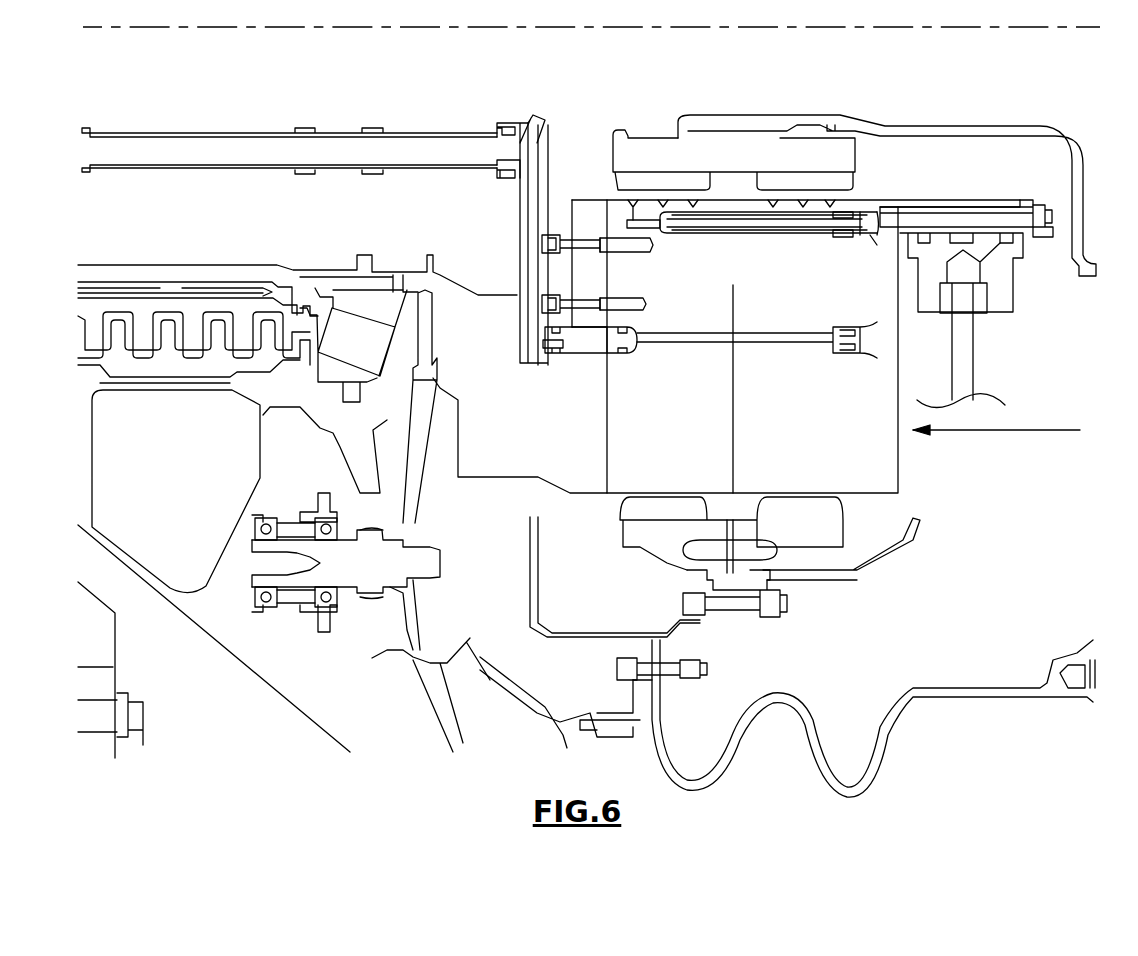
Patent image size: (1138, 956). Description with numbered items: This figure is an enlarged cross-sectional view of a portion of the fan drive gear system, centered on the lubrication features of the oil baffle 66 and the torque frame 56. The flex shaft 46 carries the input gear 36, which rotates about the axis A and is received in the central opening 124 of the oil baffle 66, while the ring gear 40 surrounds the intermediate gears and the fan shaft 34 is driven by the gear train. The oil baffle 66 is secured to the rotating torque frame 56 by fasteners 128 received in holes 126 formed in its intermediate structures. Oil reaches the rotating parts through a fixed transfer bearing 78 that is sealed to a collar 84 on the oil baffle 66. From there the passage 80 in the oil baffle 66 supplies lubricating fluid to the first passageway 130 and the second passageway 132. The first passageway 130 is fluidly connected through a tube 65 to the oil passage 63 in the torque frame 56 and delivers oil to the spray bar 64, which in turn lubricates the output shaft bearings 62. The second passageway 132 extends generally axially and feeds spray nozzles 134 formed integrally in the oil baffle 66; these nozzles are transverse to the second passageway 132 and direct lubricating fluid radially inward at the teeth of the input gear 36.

The axis A is at (908, 30).
The spray bar 64 is at (360, 128).
The flex shaft 46 is at (886, 128).
The input gear 36 is at (850, 157).
The central opening 124 is at (723, 200).
The spray nozzles 134 is at (693, 203).
The second passageway 132 is at (807, 237).
The passage 80 is at (921, 213).
The collar 84 is at (965, 208).
The transfer bearing 78 is at (1003, 307).
The fasteners 128 is at (592, 305).
The holes 126 is at (645, 305).
The oil baffle 66 is at (897, 462).
The torque frame 56 is at (502, 470).
The oil passage 63 is at (578, 352).
The tube 65 is at (613, 352).
The first passageway 130 is at (762, 335).
The fan shaft 34 is at (247, 273).
The output shaft bearings 62 is at (405, 355).
The ring gear 40 is at (820, 537).